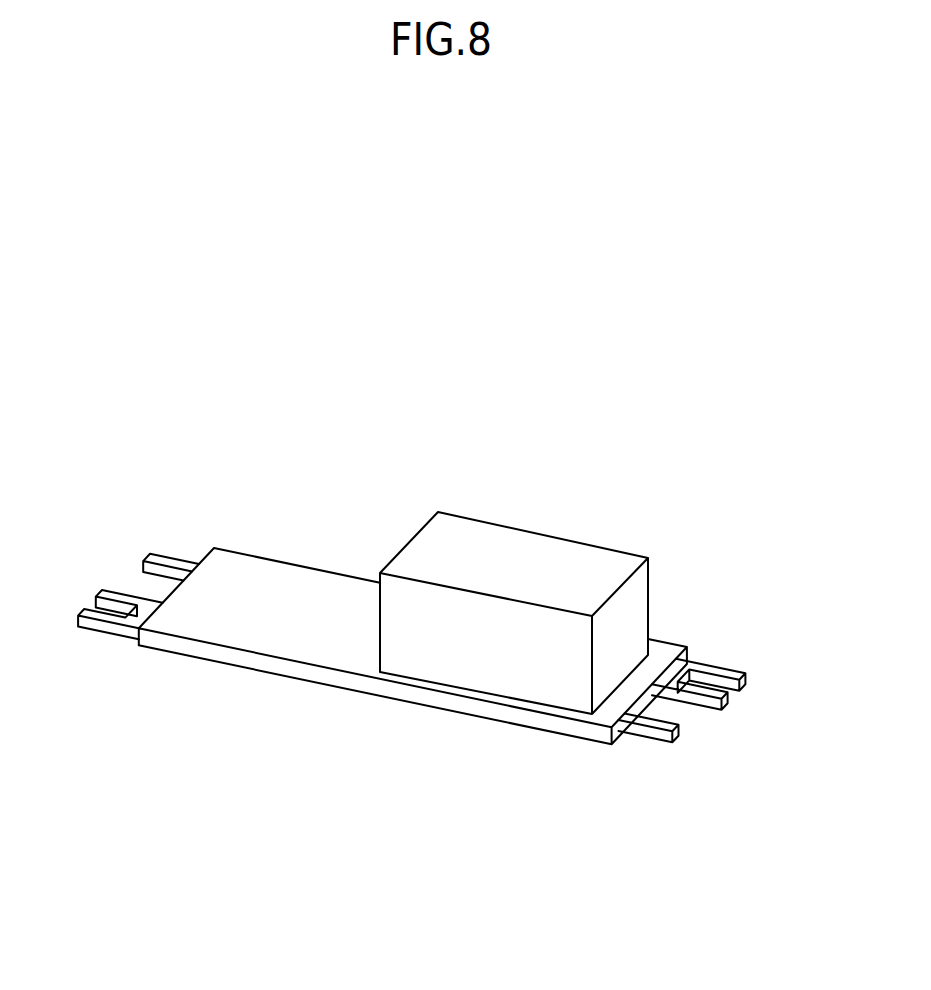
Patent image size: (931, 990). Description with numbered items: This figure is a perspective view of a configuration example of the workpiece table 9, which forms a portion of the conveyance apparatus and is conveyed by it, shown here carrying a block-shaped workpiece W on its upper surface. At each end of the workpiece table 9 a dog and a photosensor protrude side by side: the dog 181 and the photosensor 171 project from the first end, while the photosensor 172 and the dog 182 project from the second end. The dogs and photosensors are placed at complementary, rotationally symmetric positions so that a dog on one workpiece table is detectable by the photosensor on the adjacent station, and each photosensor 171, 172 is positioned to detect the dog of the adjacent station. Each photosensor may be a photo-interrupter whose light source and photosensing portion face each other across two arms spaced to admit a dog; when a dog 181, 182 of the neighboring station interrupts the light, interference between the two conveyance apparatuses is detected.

The workpiece table 9 is at (285, 668).
The workpiece / electronic component W is at (533, 546).
The photosensor 171 is at (90, 636).
The photosensor 172 is at (722, 662).
The dog 181 is at (165, 560).
The dog 182 is at (651, 743).